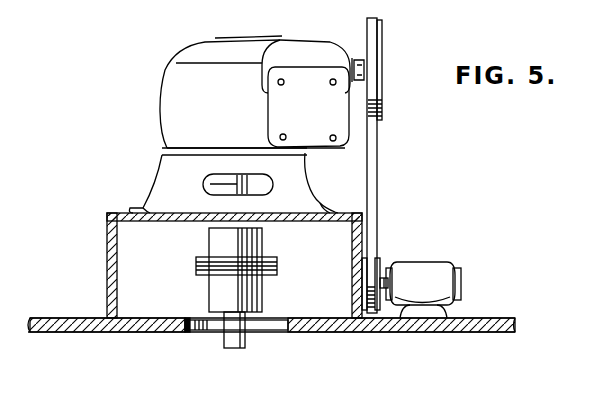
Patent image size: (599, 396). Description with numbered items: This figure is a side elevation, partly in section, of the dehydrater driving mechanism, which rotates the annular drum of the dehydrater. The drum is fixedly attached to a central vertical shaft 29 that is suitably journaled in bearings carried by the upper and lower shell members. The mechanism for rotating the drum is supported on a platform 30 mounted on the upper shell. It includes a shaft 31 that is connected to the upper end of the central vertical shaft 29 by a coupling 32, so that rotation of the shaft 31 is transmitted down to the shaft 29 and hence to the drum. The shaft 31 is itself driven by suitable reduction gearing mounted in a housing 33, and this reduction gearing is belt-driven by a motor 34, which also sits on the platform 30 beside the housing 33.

The central vertical shaft 29 is at (223, 345).
The platform 30 is at (62, 318).
The shaft 31 is at (203, 187).
The coupling 32 is at (265, 241).
The housing 33 is at (175, 104).
The motor 34 is at (433, 263).